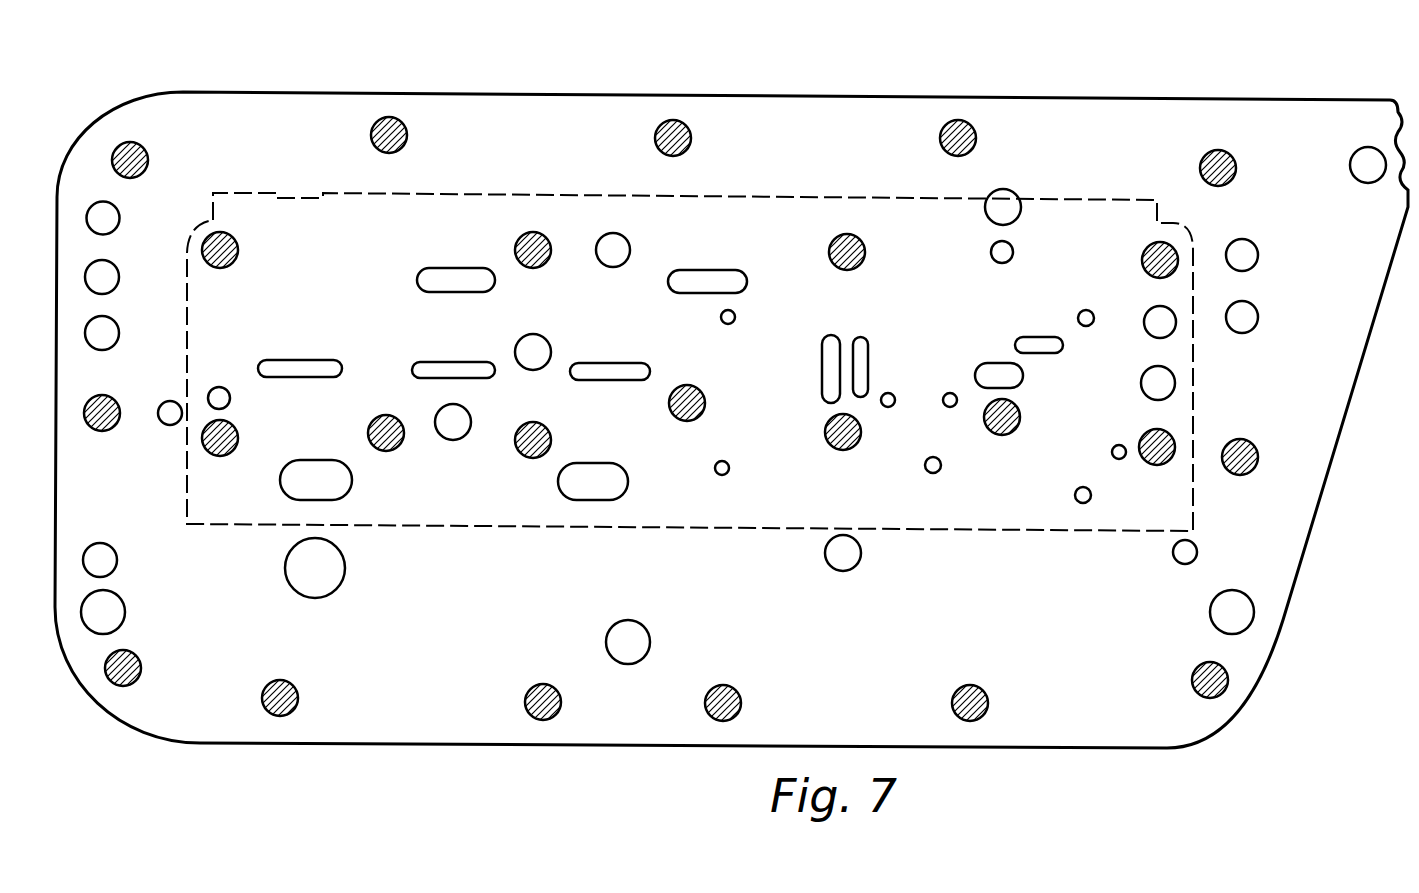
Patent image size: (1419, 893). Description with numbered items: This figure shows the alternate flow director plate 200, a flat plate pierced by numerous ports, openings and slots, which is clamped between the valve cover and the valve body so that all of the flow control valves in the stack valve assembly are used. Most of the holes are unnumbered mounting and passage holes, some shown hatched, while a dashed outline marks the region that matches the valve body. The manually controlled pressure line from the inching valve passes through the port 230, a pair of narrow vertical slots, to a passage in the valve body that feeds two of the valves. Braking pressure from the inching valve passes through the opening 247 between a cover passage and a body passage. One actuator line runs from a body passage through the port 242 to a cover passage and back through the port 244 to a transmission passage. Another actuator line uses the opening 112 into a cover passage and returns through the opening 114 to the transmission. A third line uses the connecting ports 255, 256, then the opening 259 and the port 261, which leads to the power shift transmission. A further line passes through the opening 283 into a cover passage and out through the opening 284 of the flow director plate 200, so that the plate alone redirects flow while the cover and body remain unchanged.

The flow director plate 200 is at (1057, 92).
The opening 114 is at (112, 212).
The opening 284 is at (112, 289).
The opening 283 is at (303, 367).
The connecting port 255 is at (625, 367).
The connecting port 256 is at (728, 273).
The port 230 is at (828, 375).
The opening 247 is at (948, 393).
The opening 112 is at (1020, 372).
The opening 259 is at (1157, 313).
The port 261 is at (1258, 255).
The port 244 is at (1258, 317).
The port 242 is at (1144, 388).